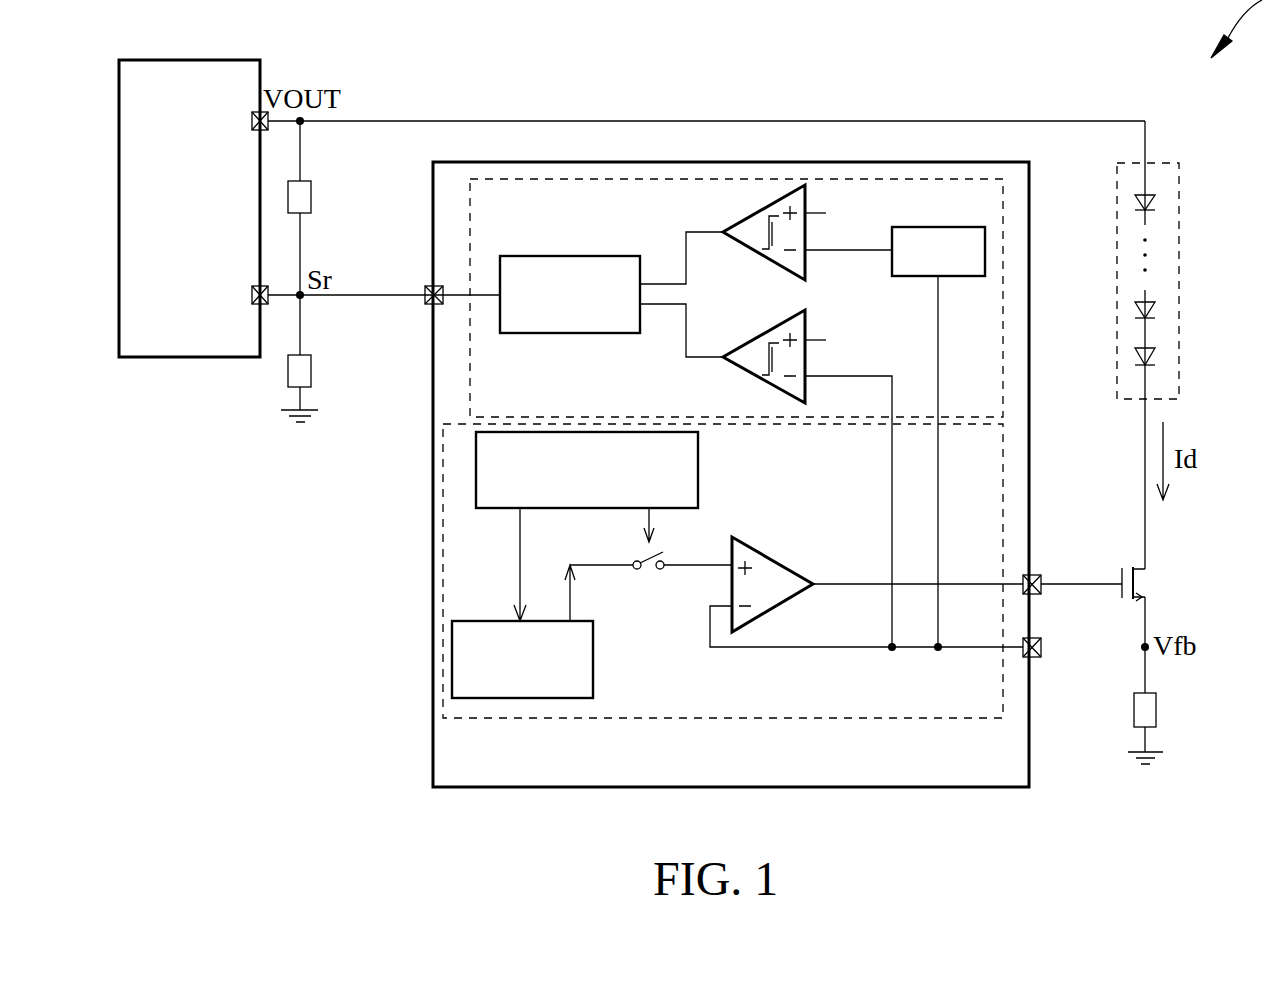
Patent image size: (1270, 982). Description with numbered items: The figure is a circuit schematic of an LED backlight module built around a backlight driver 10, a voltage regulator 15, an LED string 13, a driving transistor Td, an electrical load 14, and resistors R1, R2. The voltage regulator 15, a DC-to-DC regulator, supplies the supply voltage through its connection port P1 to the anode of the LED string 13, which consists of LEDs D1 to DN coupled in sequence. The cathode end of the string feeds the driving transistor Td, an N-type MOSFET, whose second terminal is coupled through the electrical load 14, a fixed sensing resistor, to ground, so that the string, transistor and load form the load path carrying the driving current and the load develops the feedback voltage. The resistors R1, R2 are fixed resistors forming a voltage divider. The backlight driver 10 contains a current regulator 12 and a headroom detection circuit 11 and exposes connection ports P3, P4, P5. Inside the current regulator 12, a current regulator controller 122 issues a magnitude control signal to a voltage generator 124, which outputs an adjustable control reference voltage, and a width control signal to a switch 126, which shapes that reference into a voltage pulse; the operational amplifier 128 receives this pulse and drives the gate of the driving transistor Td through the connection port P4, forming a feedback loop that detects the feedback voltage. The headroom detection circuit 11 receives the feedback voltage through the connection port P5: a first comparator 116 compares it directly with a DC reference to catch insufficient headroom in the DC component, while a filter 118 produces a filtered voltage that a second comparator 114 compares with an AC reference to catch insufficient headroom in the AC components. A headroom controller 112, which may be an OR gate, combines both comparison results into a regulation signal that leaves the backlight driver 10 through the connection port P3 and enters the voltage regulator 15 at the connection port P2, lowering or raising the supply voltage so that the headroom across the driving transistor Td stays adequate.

The backlight driver 10 is at (760, 162).
The headroom detection circuit 11 is at (857, 178).
The current regulator 12 is at (575, 718).
The LED string 13 is at (1148, 345).
The electrical load 14 is at (1157, 710).
The voltage regulator 15 is at (197, 60).
The headroom controller 112 is at (563, 334).
The second comparator 114 is at (763, 259).
The first comparator 116 is at (763, 333).
The filter 118 is at (928, 227).
The current regulator controller 122 is at (698, 478).
The voltage generator 124 is at (593, 662).
The switch 126 is at (663, 551).
The operational amplifier 128 is at (762, 547).
The connection port P1 is at (252, 118).
The connection port P2 is at (252, 297).
The connection port P3 is at (428, 308).
The connection port P4 is at (1033, 573).
The connection port P5 is at (1035, 658).
The resistor R1 is at (311, 197).
The resistor R2 is at (311, 372).
The LED D1 is at (1133, 200).
The LED DN is at (1135, 353).
The driving transistor Td is at (1142, 585).